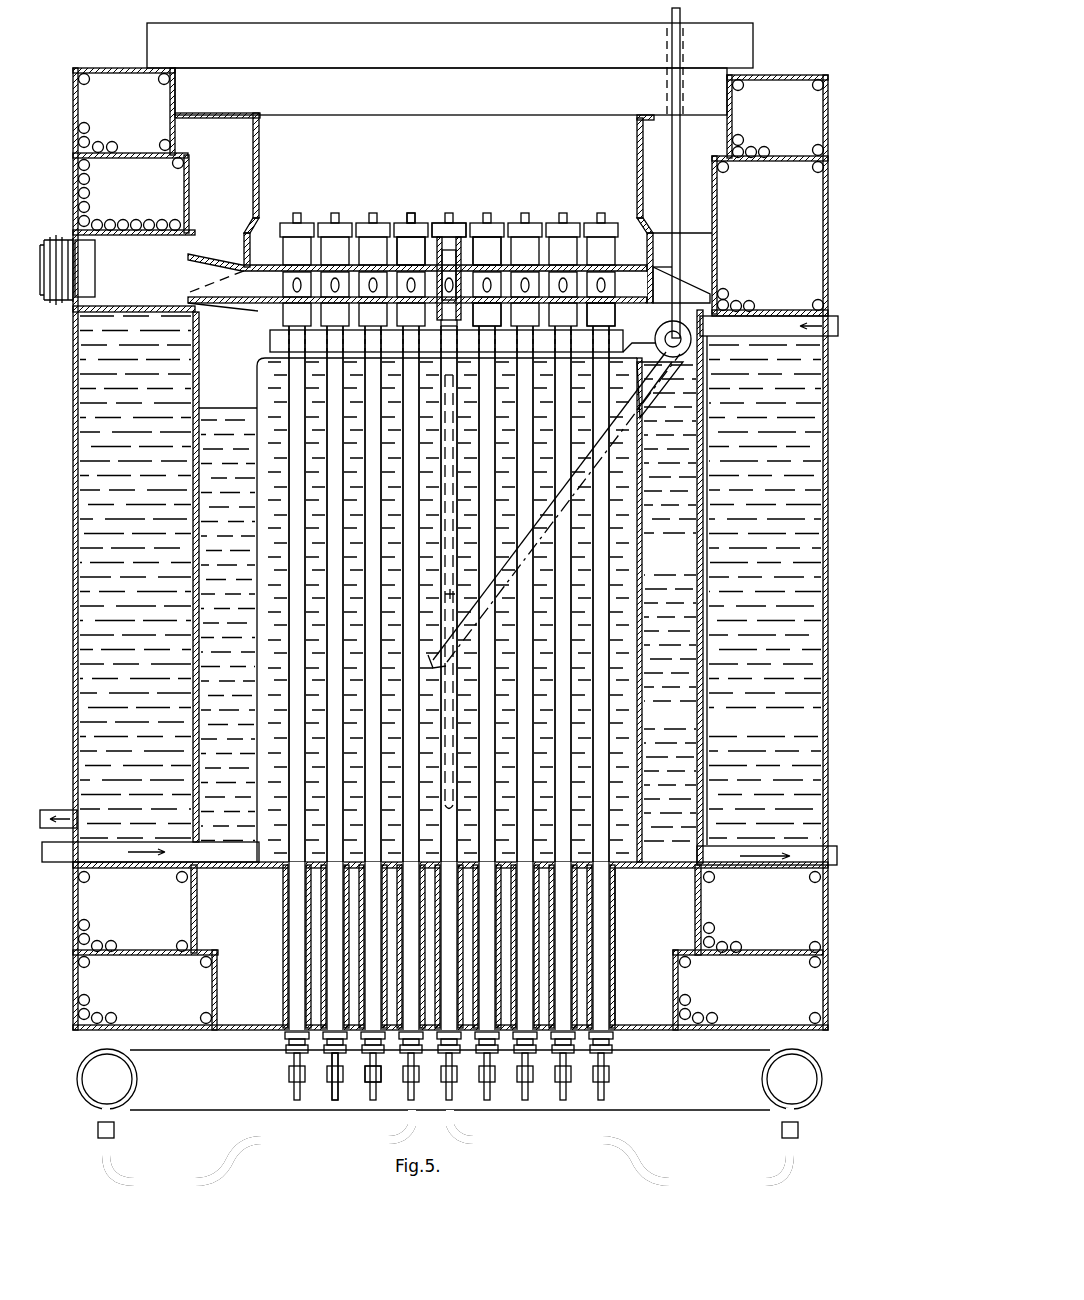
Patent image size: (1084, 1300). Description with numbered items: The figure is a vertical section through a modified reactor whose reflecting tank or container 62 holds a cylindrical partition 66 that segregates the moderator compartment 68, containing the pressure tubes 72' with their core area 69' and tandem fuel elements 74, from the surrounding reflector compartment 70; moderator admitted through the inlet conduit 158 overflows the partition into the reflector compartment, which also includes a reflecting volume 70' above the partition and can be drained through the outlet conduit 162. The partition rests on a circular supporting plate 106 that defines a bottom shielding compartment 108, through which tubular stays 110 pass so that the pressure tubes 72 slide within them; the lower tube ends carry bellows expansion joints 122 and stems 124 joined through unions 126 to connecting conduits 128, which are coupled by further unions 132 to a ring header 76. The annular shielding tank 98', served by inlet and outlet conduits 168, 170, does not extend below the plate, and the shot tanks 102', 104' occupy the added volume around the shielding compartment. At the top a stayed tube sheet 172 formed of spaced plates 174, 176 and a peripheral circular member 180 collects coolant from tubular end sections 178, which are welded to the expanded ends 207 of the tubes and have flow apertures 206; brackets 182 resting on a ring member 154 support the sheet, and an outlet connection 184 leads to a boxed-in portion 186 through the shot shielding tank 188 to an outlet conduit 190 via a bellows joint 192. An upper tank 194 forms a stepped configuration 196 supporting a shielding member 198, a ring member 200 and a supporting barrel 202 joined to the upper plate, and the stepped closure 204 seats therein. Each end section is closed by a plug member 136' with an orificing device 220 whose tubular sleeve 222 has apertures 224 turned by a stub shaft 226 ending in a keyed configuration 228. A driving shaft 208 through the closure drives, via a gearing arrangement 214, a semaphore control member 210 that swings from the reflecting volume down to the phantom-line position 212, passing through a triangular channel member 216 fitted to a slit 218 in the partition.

The container 62 is at (703, 722).
The partition 66 is at (641, 722).
The moderator compartment 68 is at (634, 610).
The core area 69' is at (555, 612).
The reflector compartment 70 is at (670, 603).
The reflecting volume 70' is at (450, 265).
The pressure tubes 72 is at (459, 678).
The pressure tubes 72' is at (431, 678).
The fuel elements 74 is at (442, 608).
The ring header 76 is at (702, 1110).
The annular shielding tank 98' is at (119, 577).
The steel shot containing tank 102' is at (136, 909).
The steel shot containing tank 104' is at (145, 990).
The supporting plate 106 is at (622, 870).
The bottom shielding compartment 108 is at (656, 974).
The tubular stays 110 is at (348, 930).
The bellows type expansion joints 122 is at (322, 1046).
The stem 124 is at (342, 1062).
The unions 126 is at (382, 1072).
The connecting conduits 128 is at (222, 1172).
The unions 132 is at (114, 1130).
The plug member 136' is at (493, 259).
The ring member 154 is at (200, 310).
The inlet conduit 158 is at (50, 862).
The outlet conduit 162 is at (794, 866).
The inlet conduit 168 is at (802, 316).
The outlet conduit 170 is at (50, 810).
The stayed tube sheet 172 is at (450, 261).
The upper plate 174 is at (640, 270).
The lower plate 176 is at (603, 314).
The tubular end sections 178 is at (378, 240).
The circular member 180 is at (655, 292).
The brackets 182 is at (715, 282).
The outlet connection 184 is at (224, 264).
The boxed-in portion 186 is at (74, 236).
The shot containing shielding tank 188 is at (190, 170).
The outlet conduit 190 is at (92, 272).
The bellows type joint 192 is at (52, 305).
The shot-containing tank 194 is at (107, 68).
The stepped configuration 196 is at (178, 156).
The shielding member 198 is at (712, 130).
The supporting ring member 200 is at (250, 116).
The supporting barrel 202 is at (259, 162).
The stepped closure 204 is at (543, 28).
The flow apertures 206 is at (292, 288).
The expanded ends 207 is at (450, 322).
The driving shaft 208 is at (681, 14).
The control member 210 is at (268, 345).
The phantom lines 212 is at (546, 482).
The gearing arrangement 214 is at (692, 350).
The channel member 216 is at (664, 390).
The slit 218 is at (640, 330).
The orificing device 220 is at (424, 261).
The tubular sleeve 222 is at (490, 251).
The apertures 224 is at (490, 314).
The stub shaft 226 is at (446, 224).
The keyed configuration 228 is at (413, 213).